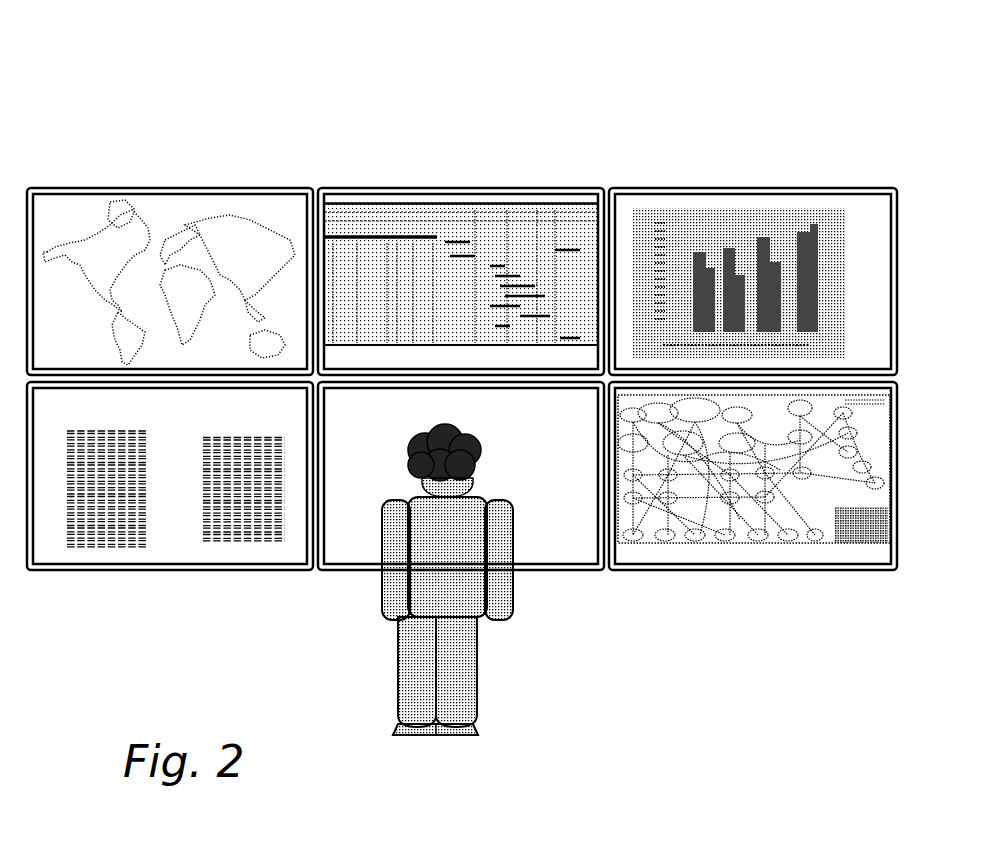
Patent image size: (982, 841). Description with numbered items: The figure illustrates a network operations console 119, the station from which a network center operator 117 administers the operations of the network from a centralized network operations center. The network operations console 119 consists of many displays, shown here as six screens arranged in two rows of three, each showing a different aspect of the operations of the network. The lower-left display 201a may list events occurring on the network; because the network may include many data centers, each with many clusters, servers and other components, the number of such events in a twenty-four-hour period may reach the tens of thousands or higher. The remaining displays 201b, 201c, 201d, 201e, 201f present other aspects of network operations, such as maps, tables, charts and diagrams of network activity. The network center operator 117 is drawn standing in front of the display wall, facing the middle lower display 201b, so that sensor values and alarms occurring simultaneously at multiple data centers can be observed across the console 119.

The network operations console 119 is at (140, 38).
The display 201a is at (205, 565).
The display 201b is at (537, 570).
The display 201c is at (698, 570).
The display 201d is at (213, 188).
The display 201e is at (515, 188).
The display 201f is at (818, 188).
The network center operator 117 is at (417, 733).